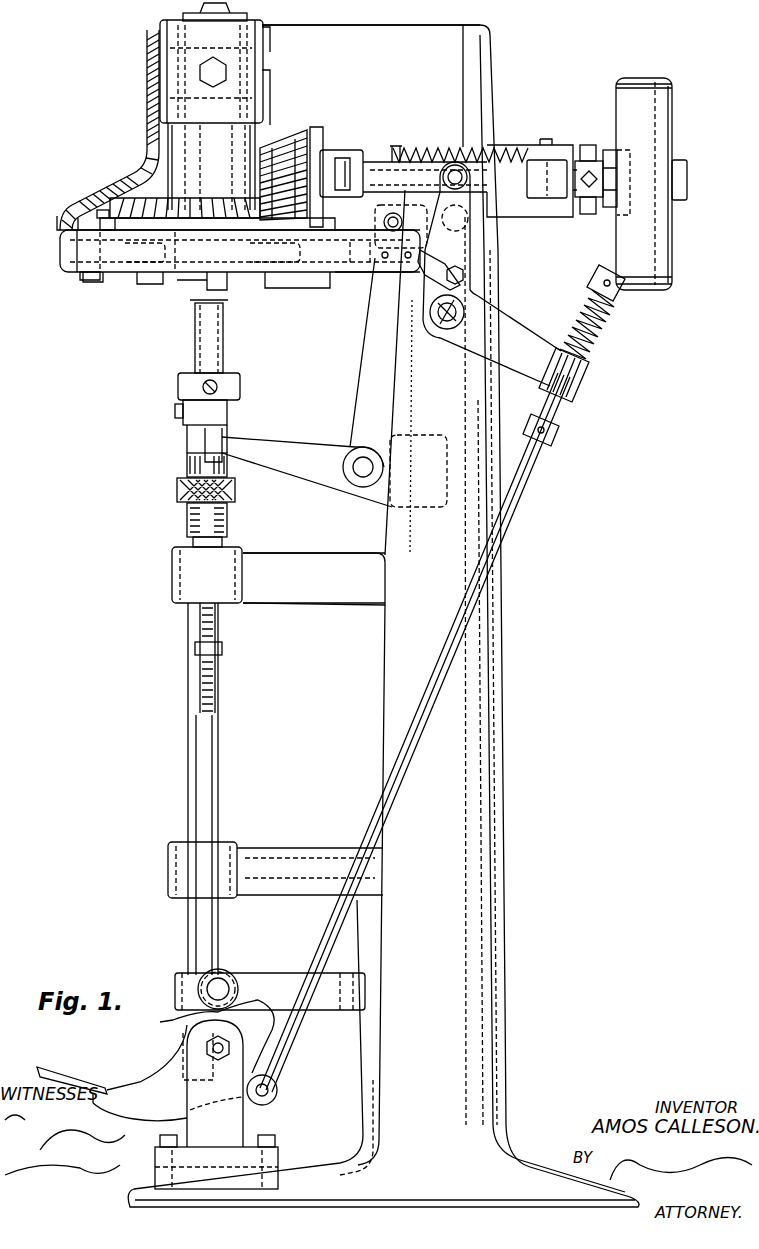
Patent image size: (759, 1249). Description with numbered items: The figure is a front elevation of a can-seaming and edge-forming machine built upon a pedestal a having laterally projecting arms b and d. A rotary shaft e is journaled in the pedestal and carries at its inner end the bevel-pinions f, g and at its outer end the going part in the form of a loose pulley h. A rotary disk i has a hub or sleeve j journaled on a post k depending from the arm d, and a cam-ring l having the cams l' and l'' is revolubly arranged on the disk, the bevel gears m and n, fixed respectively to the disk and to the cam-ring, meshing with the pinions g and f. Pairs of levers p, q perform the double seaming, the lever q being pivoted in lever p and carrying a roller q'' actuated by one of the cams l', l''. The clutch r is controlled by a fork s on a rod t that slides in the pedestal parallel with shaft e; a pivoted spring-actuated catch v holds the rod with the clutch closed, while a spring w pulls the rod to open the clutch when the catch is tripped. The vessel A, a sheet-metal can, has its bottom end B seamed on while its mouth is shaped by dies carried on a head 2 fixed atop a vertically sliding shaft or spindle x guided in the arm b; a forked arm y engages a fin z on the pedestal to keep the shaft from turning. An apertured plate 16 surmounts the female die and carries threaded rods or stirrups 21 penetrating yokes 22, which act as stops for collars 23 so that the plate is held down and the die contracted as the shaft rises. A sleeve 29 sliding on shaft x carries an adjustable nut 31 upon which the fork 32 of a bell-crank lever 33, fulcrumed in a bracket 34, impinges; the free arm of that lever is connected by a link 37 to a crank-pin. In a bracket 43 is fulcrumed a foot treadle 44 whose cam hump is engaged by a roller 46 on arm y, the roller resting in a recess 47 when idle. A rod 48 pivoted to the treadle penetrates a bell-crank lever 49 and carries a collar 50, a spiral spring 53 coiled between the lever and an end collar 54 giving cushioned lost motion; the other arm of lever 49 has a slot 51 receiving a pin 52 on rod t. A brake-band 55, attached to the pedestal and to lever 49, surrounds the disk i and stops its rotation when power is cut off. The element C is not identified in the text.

The pedestal a is at (498, 690).
The arm d is at (350, 28).
The hub or sleeve j is at (150, 150).
The roller q'' is at (71, 207).
The post k is at (165, 184).
The bevel gear m is at (152, 202).
The bevel gear n is at (115, 215).
The bevel-pinion g is at (272, 145).
The bevel-pinion f is at (298, 142).
The pivoted spring actuated catch v is at (325, 178).
The cam-ring l is at (240, 267).
The cam l'' is at (108, 265).
The cam l' is at (154, 268).
The lever p is at (80, 276).
The lever q is at (187, 289).
The brake-band 55 is at (324, 262).
The rotary disk i is at (361, 352).
The link 37 is at (468, 274).
The pin 52 is at (450, 186).
The rod t is at (514, 195).
The spring w is at (459, 138).
The slot 51 is at (466, 158).
The fork s is at (598, 148).
The clutch r is at (612, 210).
The loose pulley h is at (650, 288).
The rotary shaft e is at (687, 180).
The bell crank lever 49 is at (522, 348).
The spiral spring 53 is at (601, 325).
The collar 54 is at (598, 279).
The rod 48 is at (413, 743).
The collar 50 is at (557, 432).
The vessel A is at (223, 345).
The end B is at (198, 310).
The apertured plate 16 is at (243, 380).
The head 2 is at (226, 400).
The sleeve 29 is at (228, 470).
The adjustable collar or nut 31 is at (235, 491).
The threaded rods or stirrups 21 is at (228, 519).
The fork 32 is at (240, 450).
The bell-crank lever 33 is at (305, 455).
The bracket 34 is at (380, 496).
The arm C is at (312, 563).
The yokes 22 is at (195, 598).
The collars 23 is at (222, 650).
The shaft or spindle x is at (212, 775).
The arm b is at (300, 848).
The fin z is at (360, 1012).
The forked arm y is at (326, 1005).
The roller 46 is at (230, 975).
The recess 47 is at (192, 1018).
The bracket 43 is at (246, 1118).
The lever or foot treadle 44 is at (128, 1090).